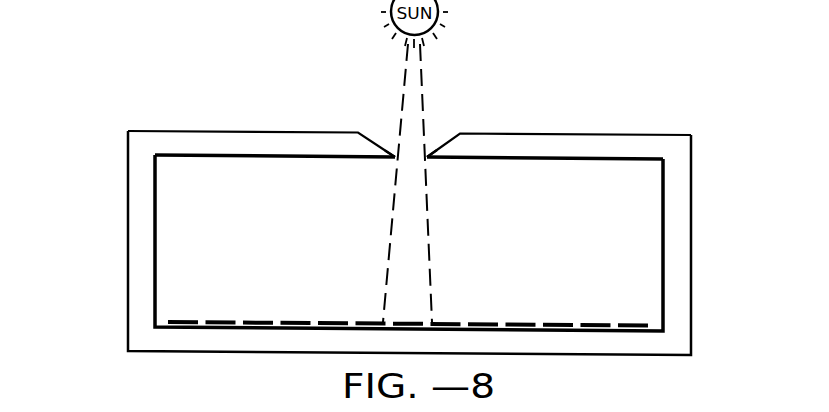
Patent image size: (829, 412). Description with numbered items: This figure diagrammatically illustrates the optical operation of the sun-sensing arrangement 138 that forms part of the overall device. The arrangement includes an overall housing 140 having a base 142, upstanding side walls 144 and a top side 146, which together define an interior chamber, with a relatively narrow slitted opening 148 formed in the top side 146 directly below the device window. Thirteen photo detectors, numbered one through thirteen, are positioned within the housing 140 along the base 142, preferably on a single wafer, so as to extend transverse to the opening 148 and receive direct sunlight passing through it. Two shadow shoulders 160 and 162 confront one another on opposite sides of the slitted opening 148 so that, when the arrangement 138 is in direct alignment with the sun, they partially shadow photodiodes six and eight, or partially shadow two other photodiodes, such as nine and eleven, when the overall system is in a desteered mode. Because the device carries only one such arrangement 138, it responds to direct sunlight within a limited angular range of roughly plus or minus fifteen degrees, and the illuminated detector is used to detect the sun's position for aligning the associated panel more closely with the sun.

The arrangement 138 is at (106, 158).
The housing 140 is at (255, 126).
The base 142 is at (200, 343).
The side walls 144 is at (692, 243).
The top side 146 is at (650, 134).
The opening 148 is at (433, 142).
The shadow shoulder 160 is at (430, 158).
The shadow shoulder 162 is at (395, 158).